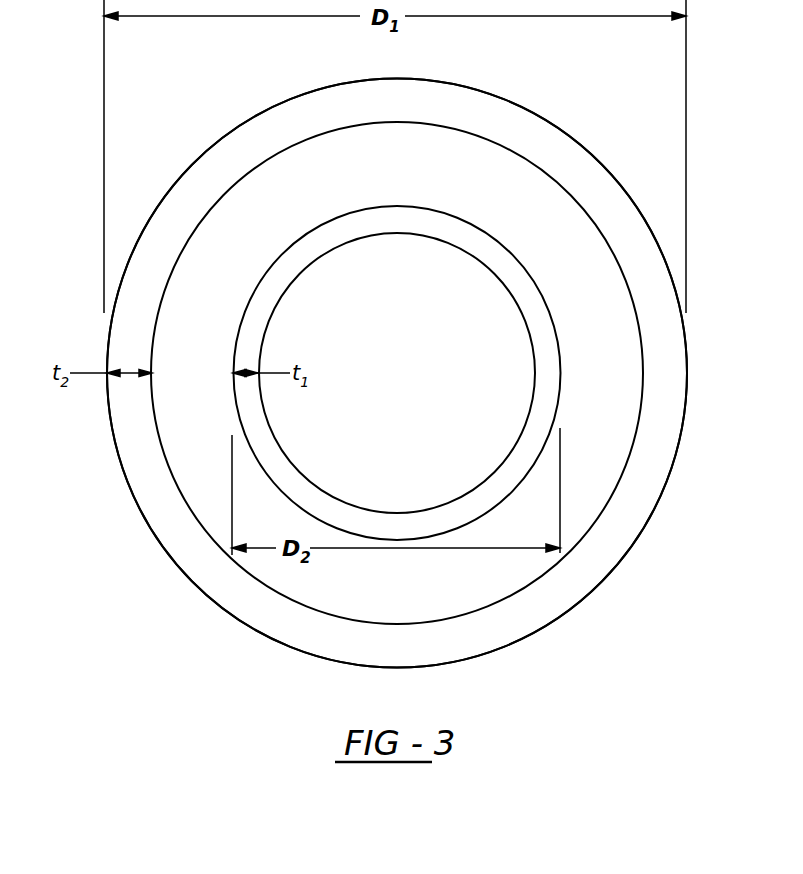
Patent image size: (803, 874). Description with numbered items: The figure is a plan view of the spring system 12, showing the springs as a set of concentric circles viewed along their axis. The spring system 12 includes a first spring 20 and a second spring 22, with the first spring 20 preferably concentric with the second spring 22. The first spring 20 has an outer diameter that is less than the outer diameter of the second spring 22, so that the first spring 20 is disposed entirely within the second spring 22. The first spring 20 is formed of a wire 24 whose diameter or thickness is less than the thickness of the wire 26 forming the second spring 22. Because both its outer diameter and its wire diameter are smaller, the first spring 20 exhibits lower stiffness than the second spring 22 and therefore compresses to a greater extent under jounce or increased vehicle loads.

The spring system 12 is at (636, 630).
The first spring 20 is at (391, 240).
The second spring 22 is at (545, 112).
The wire 24 is at (270, 292).
The wire 26 is at (643, 292).